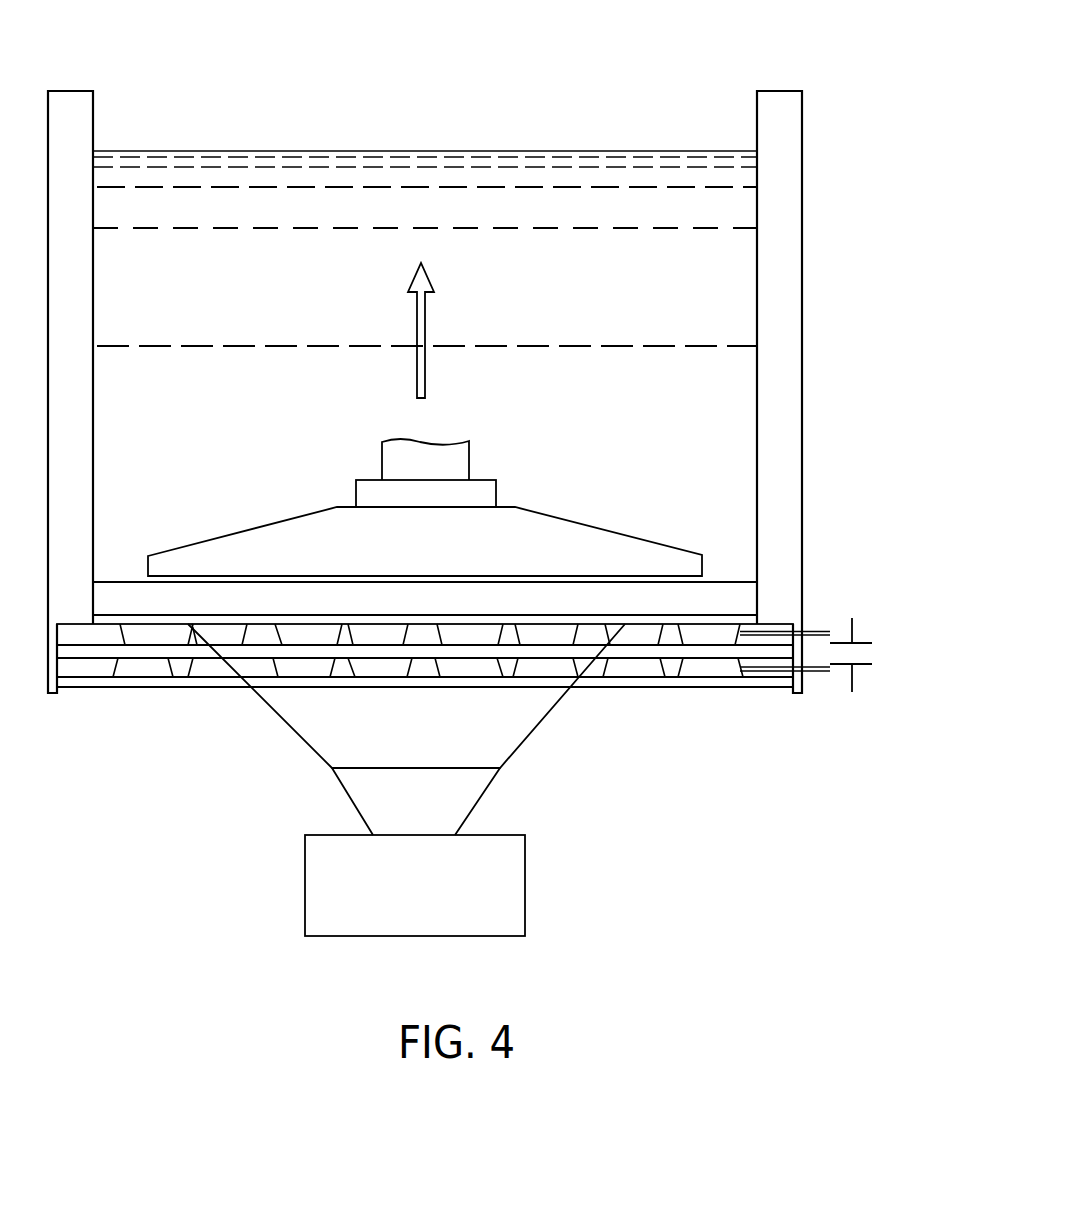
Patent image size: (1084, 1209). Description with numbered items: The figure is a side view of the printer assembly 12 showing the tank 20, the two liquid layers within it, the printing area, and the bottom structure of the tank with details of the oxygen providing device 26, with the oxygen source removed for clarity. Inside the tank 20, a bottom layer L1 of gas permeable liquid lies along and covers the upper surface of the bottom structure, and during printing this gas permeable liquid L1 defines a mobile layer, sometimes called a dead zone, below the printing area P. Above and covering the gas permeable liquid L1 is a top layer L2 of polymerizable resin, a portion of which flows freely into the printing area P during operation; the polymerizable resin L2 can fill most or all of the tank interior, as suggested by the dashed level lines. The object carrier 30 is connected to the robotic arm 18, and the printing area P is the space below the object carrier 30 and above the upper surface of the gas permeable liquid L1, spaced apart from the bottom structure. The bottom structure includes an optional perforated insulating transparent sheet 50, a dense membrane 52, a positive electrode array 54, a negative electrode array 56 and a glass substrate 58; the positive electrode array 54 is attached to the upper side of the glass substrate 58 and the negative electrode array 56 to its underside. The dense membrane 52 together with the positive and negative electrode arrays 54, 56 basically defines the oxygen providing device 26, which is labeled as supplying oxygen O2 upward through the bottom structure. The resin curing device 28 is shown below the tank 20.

The printer assembly 12 is at (707, 53).
The tank 20 is at (780, 429).
The top layer L2 is at (680, 393).
The robotic arm 18 is at (382, 462).
The object carrier 30 is at (239, 533).
The printing area P is at (482, 581).
The bottom layer L1 is at (718, 600).
The perforated insulating transparent sheet 50 is at (735, 615).
The oxygen gas O2 is at (625, 617).
The dense membrane 52 is at (145, 649).
The positive electrode array 54 is at (118, 634).
The negative electrode array 56 is at (108, 670).
The glass substrate 58 is at (93, 683).
The oxygen providing device 26 is at (877, 608).
The resin curing device 28 is at (428, 898).